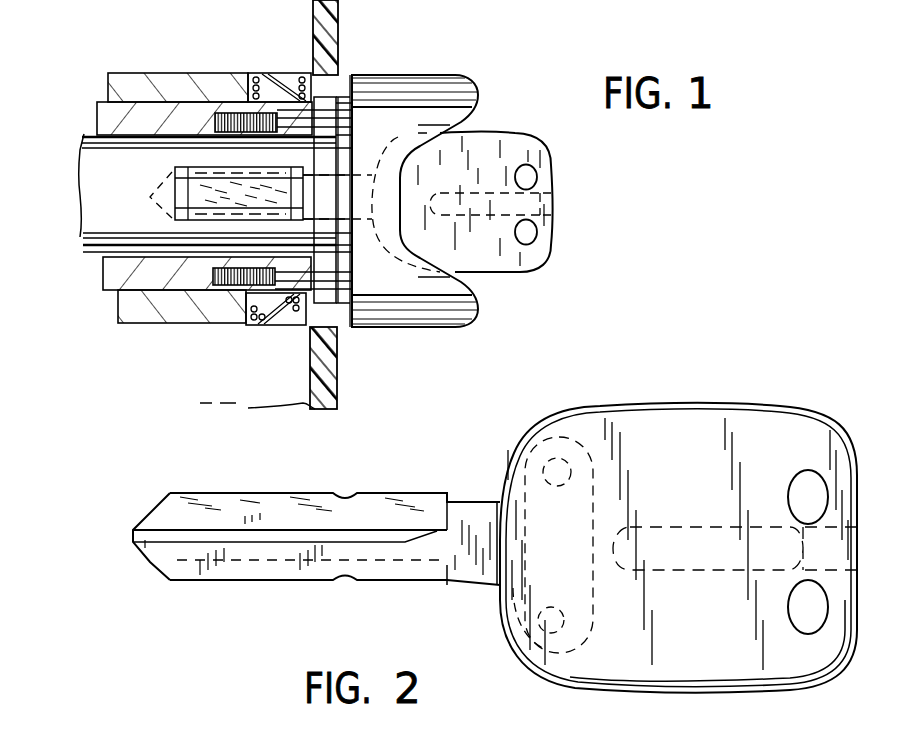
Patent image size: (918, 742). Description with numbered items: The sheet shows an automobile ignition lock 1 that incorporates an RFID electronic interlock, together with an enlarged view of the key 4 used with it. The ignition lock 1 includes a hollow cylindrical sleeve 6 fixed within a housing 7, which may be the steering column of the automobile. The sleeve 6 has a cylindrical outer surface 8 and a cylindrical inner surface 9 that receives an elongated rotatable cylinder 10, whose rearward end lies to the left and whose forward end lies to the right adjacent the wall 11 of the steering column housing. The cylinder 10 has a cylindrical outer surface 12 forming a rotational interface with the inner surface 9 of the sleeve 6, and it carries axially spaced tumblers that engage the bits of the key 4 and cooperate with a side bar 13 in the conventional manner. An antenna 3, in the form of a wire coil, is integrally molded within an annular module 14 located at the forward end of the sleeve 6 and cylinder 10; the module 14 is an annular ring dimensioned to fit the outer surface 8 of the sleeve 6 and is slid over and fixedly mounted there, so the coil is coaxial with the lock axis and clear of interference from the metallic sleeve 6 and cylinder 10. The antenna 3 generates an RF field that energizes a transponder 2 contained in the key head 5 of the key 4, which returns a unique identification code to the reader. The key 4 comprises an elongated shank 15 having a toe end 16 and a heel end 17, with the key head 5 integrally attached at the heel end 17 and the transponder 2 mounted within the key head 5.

In FIG. 1, the ignition lock 1 is at (367, 60).
In FIG. 1, the transponder 2 is at (487, 194).
In FIG. 2, the transponder 2 is at (705, 557).
In FIG. 1, the antenna 3 is at (265, 80).
In FIG. 1, the key 4 is at (479, 201).
In FIG. 2, the key 4 is at (659, 533).
In FIG. 1, the key head 5 is at (505, 272).
In FIG. 2, the key head 5 is at (692, 430).
In FIG. 1, the sleeve 6 is at (98, 118).
In FIG. 1, the housing 7 is at (157, 78).
In FIG. 1, the outer surface 8 is at (119, 300).
In FIG. 1, the inner surface 9 is at (132, 250).
In FIG. 1, the cylinder 10 is at (88, 159).
In FIG. 1, the wall 11 is at (338, 364).
In FIG. 1, the outer surface 12 is at (183, 135).
In FIG. 1, the side bar 13 is at (182, 197).
In FIG. 1, the annular module 14 is at (276, 326).
In FIG. 2, the shank 15 is at (278, 580).
In FIG. 2, the toe end 16 is at (150, 562).
In FIG. 2, the heel end 17 is at (541, 515).